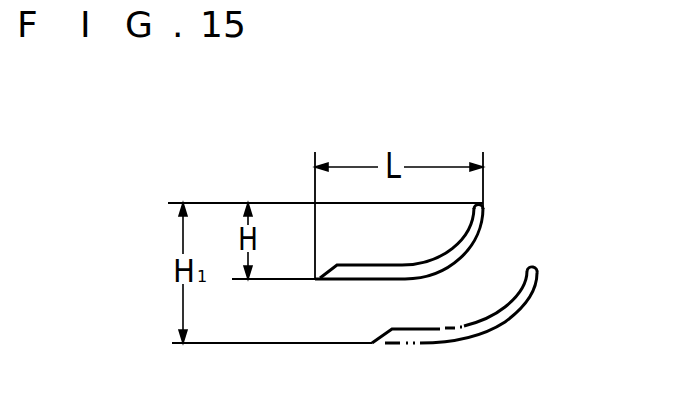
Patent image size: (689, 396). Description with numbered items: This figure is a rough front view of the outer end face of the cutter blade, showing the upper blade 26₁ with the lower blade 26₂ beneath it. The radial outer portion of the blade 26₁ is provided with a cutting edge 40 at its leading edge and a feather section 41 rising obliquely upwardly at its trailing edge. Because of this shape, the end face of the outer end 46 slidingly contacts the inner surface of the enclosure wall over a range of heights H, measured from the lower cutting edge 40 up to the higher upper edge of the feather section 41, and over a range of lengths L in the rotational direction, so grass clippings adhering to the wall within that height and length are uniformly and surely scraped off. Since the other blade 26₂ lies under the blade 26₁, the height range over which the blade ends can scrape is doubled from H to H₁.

The blade 26 is at (427, 284).
The cutting edge 40 is at (321, 280).
The feather section 41 is at (485, 221).
The outer end 46 is at (404, 264).